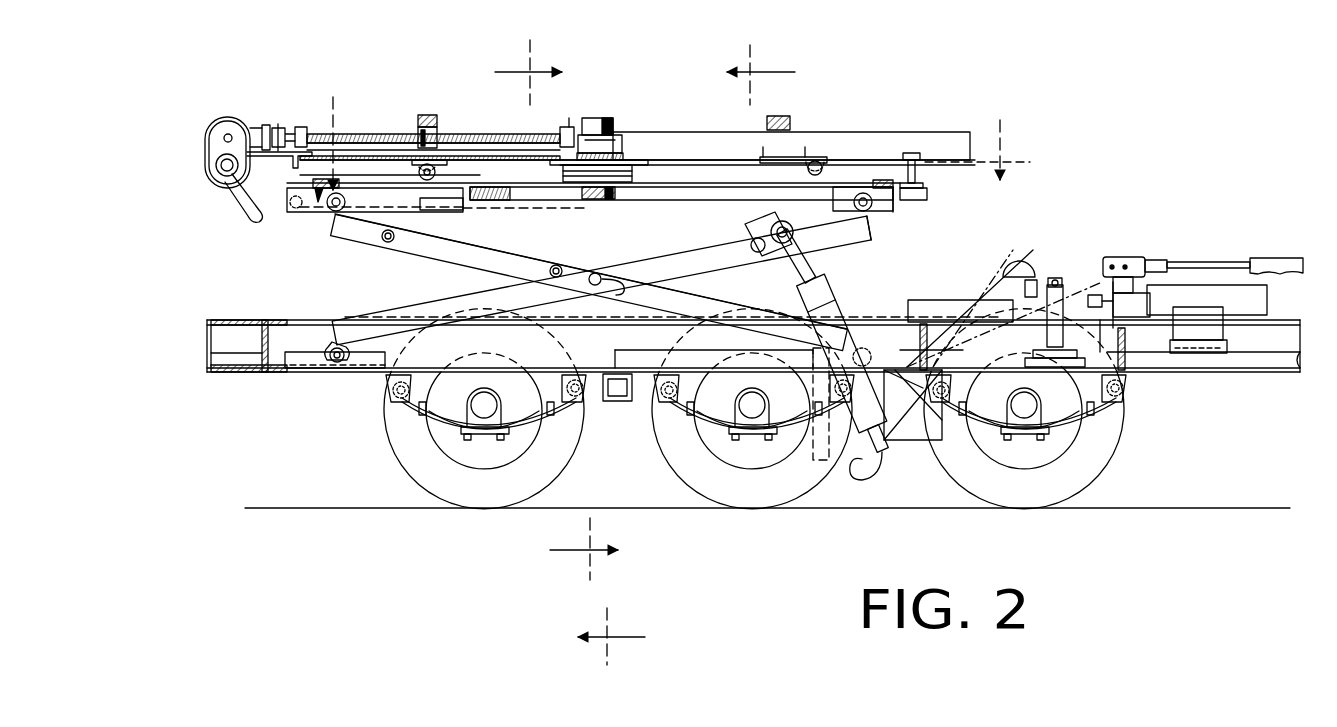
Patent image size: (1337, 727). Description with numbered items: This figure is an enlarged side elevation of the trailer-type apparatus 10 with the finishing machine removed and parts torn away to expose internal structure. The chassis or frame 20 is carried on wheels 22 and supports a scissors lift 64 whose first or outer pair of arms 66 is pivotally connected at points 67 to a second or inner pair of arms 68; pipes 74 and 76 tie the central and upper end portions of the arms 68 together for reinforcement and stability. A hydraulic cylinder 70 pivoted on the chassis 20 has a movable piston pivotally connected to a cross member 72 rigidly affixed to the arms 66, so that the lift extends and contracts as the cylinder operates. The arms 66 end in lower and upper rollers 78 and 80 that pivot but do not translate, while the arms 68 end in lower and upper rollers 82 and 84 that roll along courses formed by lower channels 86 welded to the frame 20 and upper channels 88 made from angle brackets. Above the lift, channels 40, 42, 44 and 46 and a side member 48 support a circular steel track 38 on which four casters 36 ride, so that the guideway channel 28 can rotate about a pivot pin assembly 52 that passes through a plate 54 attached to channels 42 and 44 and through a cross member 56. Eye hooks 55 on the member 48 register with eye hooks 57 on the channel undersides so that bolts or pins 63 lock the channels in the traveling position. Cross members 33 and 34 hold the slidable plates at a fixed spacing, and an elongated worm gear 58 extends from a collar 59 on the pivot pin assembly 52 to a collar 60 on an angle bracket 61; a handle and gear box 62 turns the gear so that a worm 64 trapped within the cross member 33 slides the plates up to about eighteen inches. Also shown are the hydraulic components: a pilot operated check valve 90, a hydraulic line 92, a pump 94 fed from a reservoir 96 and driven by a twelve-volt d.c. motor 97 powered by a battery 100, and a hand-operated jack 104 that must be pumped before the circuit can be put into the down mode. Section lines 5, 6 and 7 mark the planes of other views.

The apparatus 10 is at (953, 130).
The chassis or frame 20 is at (1278, 370).
The wheels 22 is at (655, 450).
The channel or guideway 28 is at (855, 145).
The cross member 33 is at (430, 118).
The cross member 34 is at (790, 122).
The casters 36 is at (440, 172).
The circular steel track 38 is at (340, 185).
The channel 40 is at (318, 195).
The channel 42 is at (460, 205).
The channel 44 is at (697, 202).
The channel 46 is at (878, 208).
The side member 48 is at (615, 196).
The pivot pin assembly 52 is at (606, 118).
The plate 54 is at (575, 183).
The eye hooks 55 is at (917, 200).
The cross member 56 is at (622, 150).
The eye hooks 57 is at (915, 170).
The worm gear 58 is at (395, 139).
The collar 59 is at (566, 127).
The collar 60 is at (302, 128).
The angle bracket 61 is at (296, 168).
The handle and gear box 62 is at (217, 118).
The bolts or pins 63 is at (915, 188).
The scissors lift or jack 64 is at (432, 140).
The first or outer pair of arms 66 is at (830, 228).
The pivot points 67 is at (598, 284).
The second or inner pair of arms 68 is at (355, 228).
The hydraulic cylinder 70 is at (843, 305).
The cross member 72 is at (747, 258).
The pipe 74 is at (557, 272).
The pipe 76 is at (388, 237).
The lower roller 78 is at (328, 355).
The upper roller 80 is at (867, 213).
The lower rollers 82 is at (905, 305).
The upper rollers 84 is at (333, 215).
The lower channels 86 is at (823, 440).
The upper channels 88 is at (437, 215).
The pilot operated check valve 90 is at (868, 468).
The hydraulic line 92 is at (1028, 262).
The hydraulic fluid pump 94 is at (1087, 274).
The reservoir 96 is at (960, 295).
The d.c. motor 97 is at (1115, 346).
The battery 100 is at (1200, 330).
The hand-operated jack 104 is at (1235, 262).
The section line 5 is at (675, 135).
The section line 6 is at (556, 310).
The section line 7 is at (686, 356).